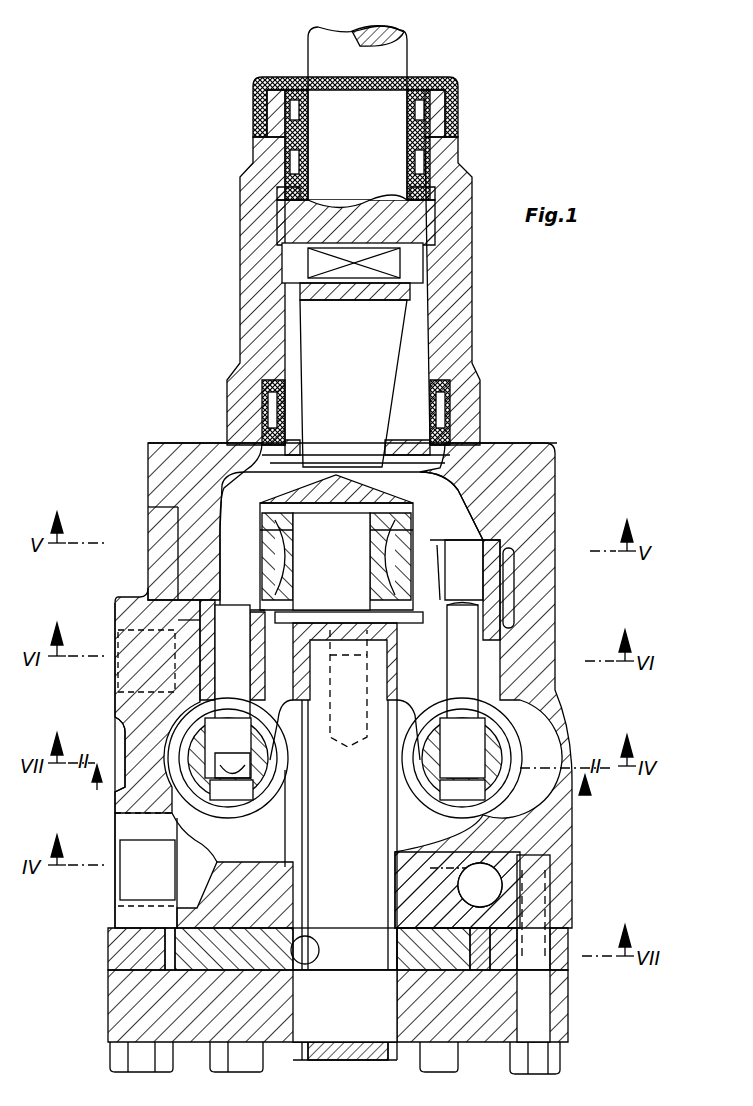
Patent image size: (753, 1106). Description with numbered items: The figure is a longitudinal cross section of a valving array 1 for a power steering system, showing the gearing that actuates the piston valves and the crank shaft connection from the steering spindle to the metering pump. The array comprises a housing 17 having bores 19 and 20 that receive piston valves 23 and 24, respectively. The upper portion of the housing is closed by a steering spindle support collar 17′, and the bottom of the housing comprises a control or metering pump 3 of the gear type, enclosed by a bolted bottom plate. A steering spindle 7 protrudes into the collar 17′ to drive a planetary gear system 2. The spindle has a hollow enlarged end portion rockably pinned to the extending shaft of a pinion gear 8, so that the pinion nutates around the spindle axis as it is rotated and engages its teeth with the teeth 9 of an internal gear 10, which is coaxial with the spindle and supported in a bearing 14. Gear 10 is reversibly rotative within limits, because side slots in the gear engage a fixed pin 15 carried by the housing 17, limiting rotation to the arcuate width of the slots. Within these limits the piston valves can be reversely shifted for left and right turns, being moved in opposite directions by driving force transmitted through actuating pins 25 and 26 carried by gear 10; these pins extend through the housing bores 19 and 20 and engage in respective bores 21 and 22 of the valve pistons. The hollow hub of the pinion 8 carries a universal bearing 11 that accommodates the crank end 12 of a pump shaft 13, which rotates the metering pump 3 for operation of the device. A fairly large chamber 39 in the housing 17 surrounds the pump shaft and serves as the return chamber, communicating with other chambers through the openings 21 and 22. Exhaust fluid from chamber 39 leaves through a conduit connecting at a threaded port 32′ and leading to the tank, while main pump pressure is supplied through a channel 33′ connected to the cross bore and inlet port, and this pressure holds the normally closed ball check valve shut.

The valving array 1 is at (90, 712).
The planetary gear system 2 is at (135, 500).
The metering pump 3 is at (86, 1013).
The steering spindle 7 is at (332, 172).
The pinion gear 8 is at (343, 341).
The teeth of internal gear 9 is at (472, 580).
The internal gear 10 is at (490, 645).
The universal bearing 11 is at (258, 541).
The crank end 12 is at (318, 560).
The pump shaft 13 is at (432, 856).
The bearing 14 is at (230, 597).
The fixed pin 15 is at (430, 700).
The housing 17 is at (533, 732).
The steering spindle support collar 17′ is at (252, 401).
The bore 19 is at (215, 679).
The bore 20 is at (480, 686).
The bore of valve piston 21 is at (190, 797).
The bore of valve piston 22 is at (485, 788).
The piston valve 23 is at (218, 757).
The piston valve 24 is at (455, 768).
The actuating pin 25 is at (228, 731).
The actuating pin 26 is at (455, 698).
The threaded port 32′ is at (145, 883).
The channel 33′ is at (483, 887).
The chamber 39 is at (420, 823).